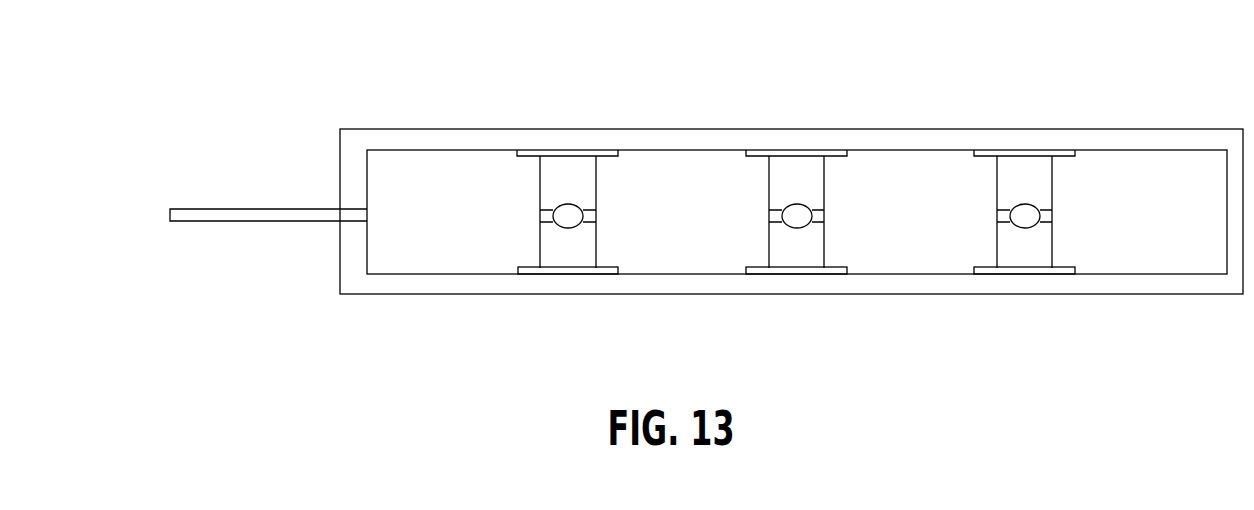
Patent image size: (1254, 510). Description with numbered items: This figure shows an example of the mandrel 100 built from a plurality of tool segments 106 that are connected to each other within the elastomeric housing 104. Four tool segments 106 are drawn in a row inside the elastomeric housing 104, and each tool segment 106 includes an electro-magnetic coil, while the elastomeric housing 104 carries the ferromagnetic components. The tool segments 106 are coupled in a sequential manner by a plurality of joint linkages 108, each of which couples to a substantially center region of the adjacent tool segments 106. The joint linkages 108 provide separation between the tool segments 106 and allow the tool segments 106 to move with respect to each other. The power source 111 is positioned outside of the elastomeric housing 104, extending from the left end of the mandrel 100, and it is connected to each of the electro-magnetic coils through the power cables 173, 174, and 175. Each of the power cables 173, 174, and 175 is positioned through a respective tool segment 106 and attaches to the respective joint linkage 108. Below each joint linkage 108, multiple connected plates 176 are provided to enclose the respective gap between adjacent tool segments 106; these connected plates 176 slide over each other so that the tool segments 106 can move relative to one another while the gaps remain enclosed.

The mandrel 100 is at (300, 98).
The elastomeric housing 104 is at (463, 295).
The tool segment 106 is at (450, 150).
The joint linkage 108 is at (568, 203).
The power source 111 is at (285, 223).
The power cable 173 is at (552, 223).
The power cable 174 is at (777, 223).
The power cable 175 is at (1005, 230).
The connected plates 176 is at (580, 275).